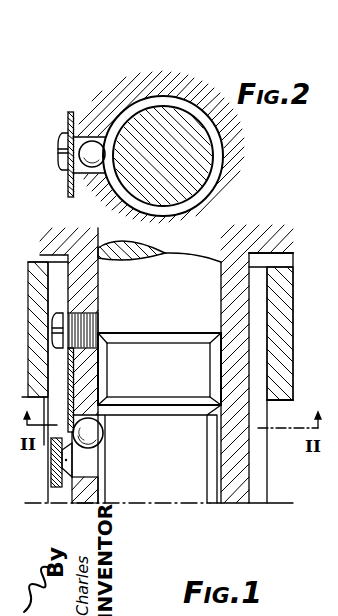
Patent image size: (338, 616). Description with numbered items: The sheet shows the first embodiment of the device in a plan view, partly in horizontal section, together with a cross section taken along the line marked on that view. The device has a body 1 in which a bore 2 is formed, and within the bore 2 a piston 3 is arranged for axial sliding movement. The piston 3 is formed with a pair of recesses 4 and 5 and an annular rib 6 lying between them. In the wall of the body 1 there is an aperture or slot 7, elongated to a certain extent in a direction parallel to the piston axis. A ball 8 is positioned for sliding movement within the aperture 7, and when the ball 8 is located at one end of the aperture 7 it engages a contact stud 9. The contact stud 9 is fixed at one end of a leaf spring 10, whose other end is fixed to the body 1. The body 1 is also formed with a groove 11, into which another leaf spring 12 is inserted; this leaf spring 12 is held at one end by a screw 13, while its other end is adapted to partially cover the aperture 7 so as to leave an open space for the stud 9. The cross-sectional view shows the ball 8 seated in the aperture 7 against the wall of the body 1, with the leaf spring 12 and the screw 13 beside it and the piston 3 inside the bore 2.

In FIG. 2, the body 1 is at (236, 130).
In FIG. 1, the body 1 is at (236, 283).
In FIG. 2, the bore 2 is at (222, 160).
In FIG. 1, the bore 2 is at (220, 356).
In FIG. 2, the piston 3 is at (178, 126).
In FIG. 1, the piston 3 is at (170, 262).
In FIG. 1, the recess 4 is at (215, 376).
In FIG. 1, the recess 5 is at (212, 455).
In FIG. 1, the annular rib 6 is at (196, 404).
In FIG. 2, the aperture or slot 7 is at (87, 136).
In FIG. 1, the aperture or slot 7 is at (84, 474).
In FIG. 2, the ball 8 is at (82, 172).
In FIG. 1, the ball 8 is at (102, 430).
In FIG. 1, the contact stud 9 is at (73, 461).
In FIG. 1, the leaf spring 10 is at (53, 490).
In FIG. 1, the groove 11 is at (78, 290).
In FIG. 2, the leaf spring 12 is at (67, 170).
In FIG. 1, the leaf spring 12 is at (72, 388).
In FIG. 2, the screw 13 is at (60, 140).
In FIG. 1, the screw 13 is at (61, 349).